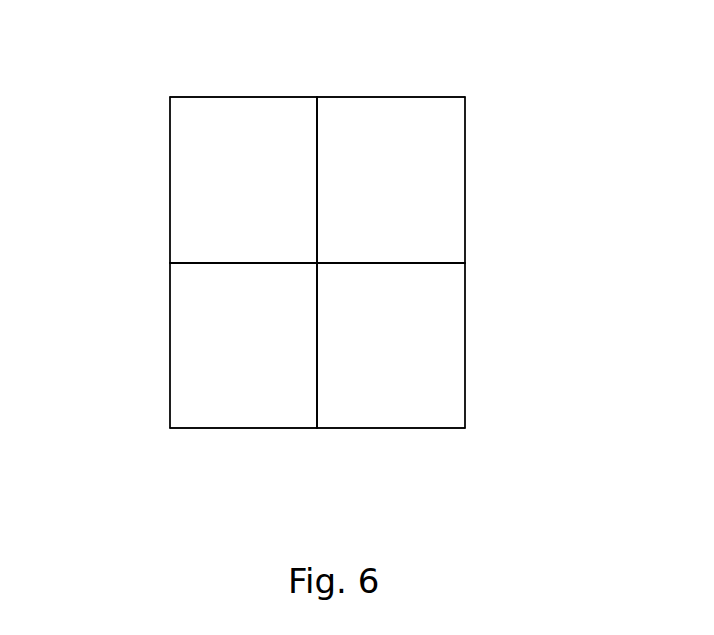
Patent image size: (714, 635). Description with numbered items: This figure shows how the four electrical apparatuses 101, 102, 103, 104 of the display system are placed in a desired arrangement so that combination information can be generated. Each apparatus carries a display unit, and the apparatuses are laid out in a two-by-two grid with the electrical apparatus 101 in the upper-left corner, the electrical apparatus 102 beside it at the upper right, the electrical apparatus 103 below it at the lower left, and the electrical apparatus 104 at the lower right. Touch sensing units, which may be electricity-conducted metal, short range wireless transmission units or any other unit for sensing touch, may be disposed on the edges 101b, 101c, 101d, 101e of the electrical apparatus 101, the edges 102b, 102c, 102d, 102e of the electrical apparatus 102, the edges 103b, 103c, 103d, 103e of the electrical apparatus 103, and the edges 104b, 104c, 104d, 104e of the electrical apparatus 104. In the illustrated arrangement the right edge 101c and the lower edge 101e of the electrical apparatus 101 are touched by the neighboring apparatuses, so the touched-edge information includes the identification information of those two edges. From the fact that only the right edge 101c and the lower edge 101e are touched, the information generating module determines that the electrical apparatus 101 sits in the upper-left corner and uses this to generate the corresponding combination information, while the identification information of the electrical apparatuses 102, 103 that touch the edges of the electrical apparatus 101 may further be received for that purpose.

The electrical apparatus 101 is at (193, 128).
The edge of electrical apparatus 101 101b is at (200, 97).
The right edge of electrical apparatus 101 101c is at (317, 130).
The edge of electrical apparatus 101 101d is at (170, 173).
The lower edge of electrical apparatus 101 101e is at (203, 262).
The electrical apparatus 102 is at (450, 125).
The edge of electrical apparatus 102 102b is at (435, 97).
The edge of electrical apparatus 102 102c is at (465, 137).
The edge of electrical apparatus 102 102d is at (318, 143).
The edge of electrical apparatus 102 102e is at (413, 262).
The electrical apparatus 103 is at (200, 394).
The edge of electrical apparatus 103 103b is at (221, 264).
The edge of electrical apparatus 103 103c is at (317, 405).
The edge of electrical apparatus 103 103d is at (170, 382).
The edge of electrical apparatus 103 103e is at (218, 430).
The electrical apparatus 104 is at (443, 393).
The edge of electrical apparatus 104 104b is at (433, 265).
The edge of electrical apparatus 104 104c is at (465, 340).
The edge of electrical apparatus 104 104d is at (318, 377).
The edge of electrical apparatus 104 104e is at (442, 430).